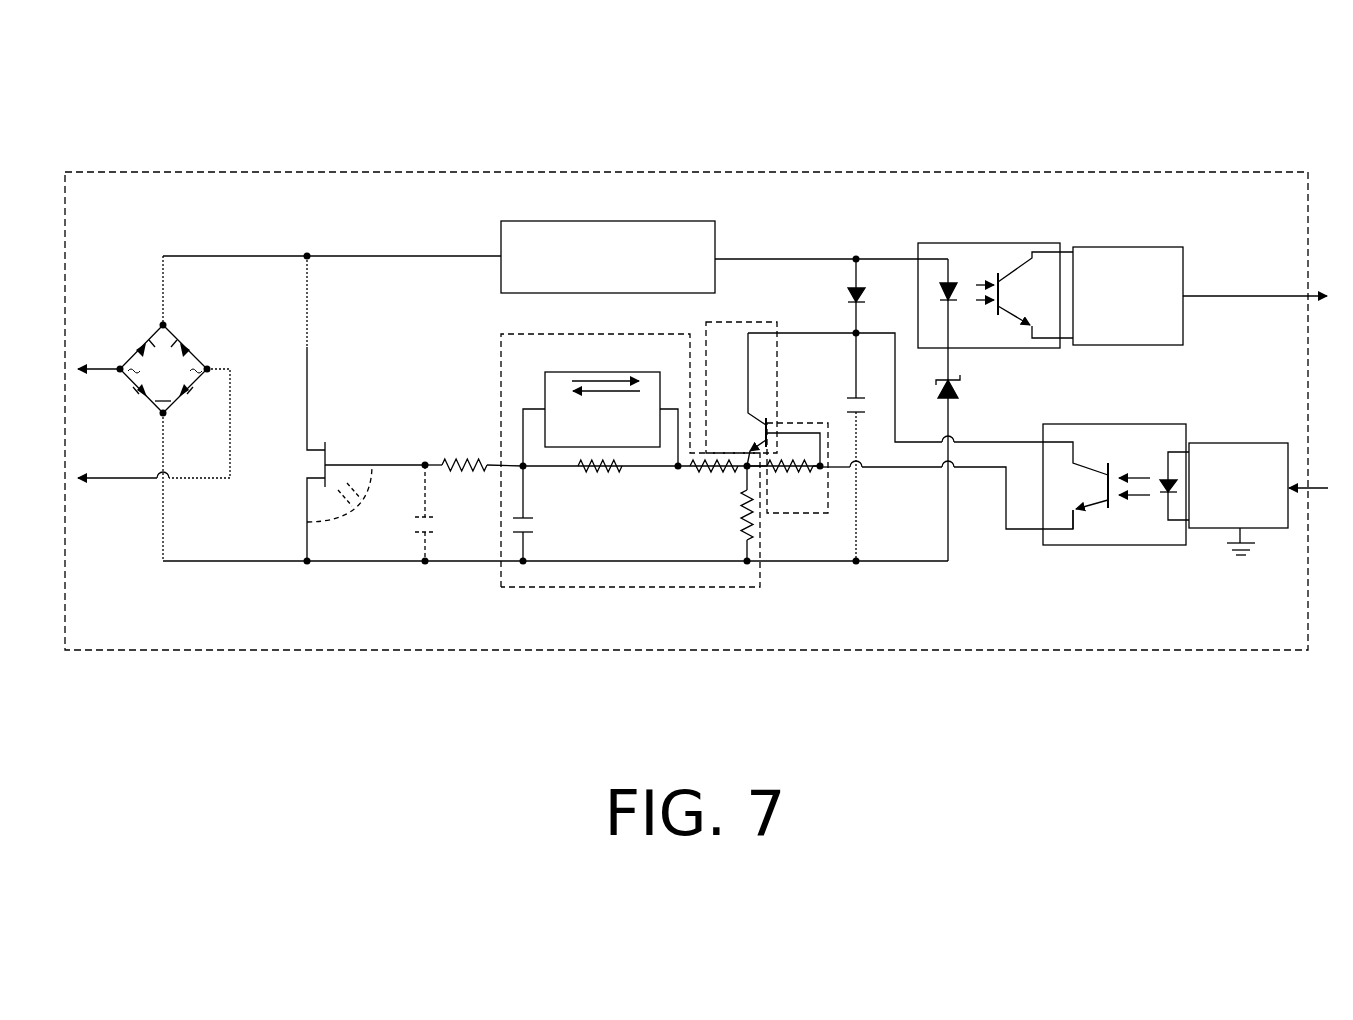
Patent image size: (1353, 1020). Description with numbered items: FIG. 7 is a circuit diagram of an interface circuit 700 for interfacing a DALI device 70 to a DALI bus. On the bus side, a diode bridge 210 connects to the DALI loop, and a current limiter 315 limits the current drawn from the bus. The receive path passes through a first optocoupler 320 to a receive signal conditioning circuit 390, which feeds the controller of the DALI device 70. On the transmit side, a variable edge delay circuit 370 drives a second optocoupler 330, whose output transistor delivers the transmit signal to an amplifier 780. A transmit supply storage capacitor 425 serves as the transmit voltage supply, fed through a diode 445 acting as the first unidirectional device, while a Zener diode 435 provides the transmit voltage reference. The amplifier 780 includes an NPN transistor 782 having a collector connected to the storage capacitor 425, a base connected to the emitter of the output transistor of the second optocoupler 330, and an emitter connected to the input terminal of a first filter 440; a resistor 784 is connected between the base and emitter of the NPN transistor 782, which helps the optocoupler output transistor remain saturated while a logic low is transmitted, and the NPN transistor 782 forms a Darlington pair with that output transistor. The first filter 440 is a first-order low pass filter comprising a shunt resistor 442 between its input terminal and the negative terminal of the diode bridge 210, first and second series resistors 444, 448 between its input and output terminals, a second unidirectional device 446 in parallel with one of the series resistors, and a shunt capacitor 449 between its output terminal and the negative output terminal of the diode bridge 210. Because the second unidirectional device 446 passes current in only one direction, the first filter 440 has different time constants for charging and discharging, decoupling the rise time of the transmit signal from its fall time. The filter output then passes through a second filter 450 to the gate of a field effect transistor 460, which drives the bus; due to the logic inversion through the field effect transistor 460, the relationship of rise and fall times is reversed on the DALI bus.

The DALI device 70 is at (1275, 36).
The interface circuit 700 is at (686, 393).
The diode bridge 210 is at (149, 408).
The current limiter 315 is at (608, 242).
The first optocoupler 320 is at (995, 276).
The second optocoupler 330 is at (1116, 503).
The variable edge delay circuit 370 is at (1238, 484).
The receive signal conditioning circuit 390 is at (1128, 279).
The transmit supply storage capacitor 425 is at (833, 447).
The Zener diode 435 is at (973, 454).
The first filter 440 is at (662, 481).
The shunt resistor 442 is at (724, 513).
The first series resistor 444 is at (600, 481).
The diode 445 is at (837, 296).
The second unidirectional device 446 is at (600, 406).
The second series resistor 448 is at (714, 481).
The shunt capacitor 449 is at (548, 513).
The second filter 450 is at (474, 446).
The field effect transistor 460 is at (371, 408).
The amplifier 780 is at (767, 404).
The NPN transistor 782 is at (767, 399).
The resistor 784 is at (787, 468).